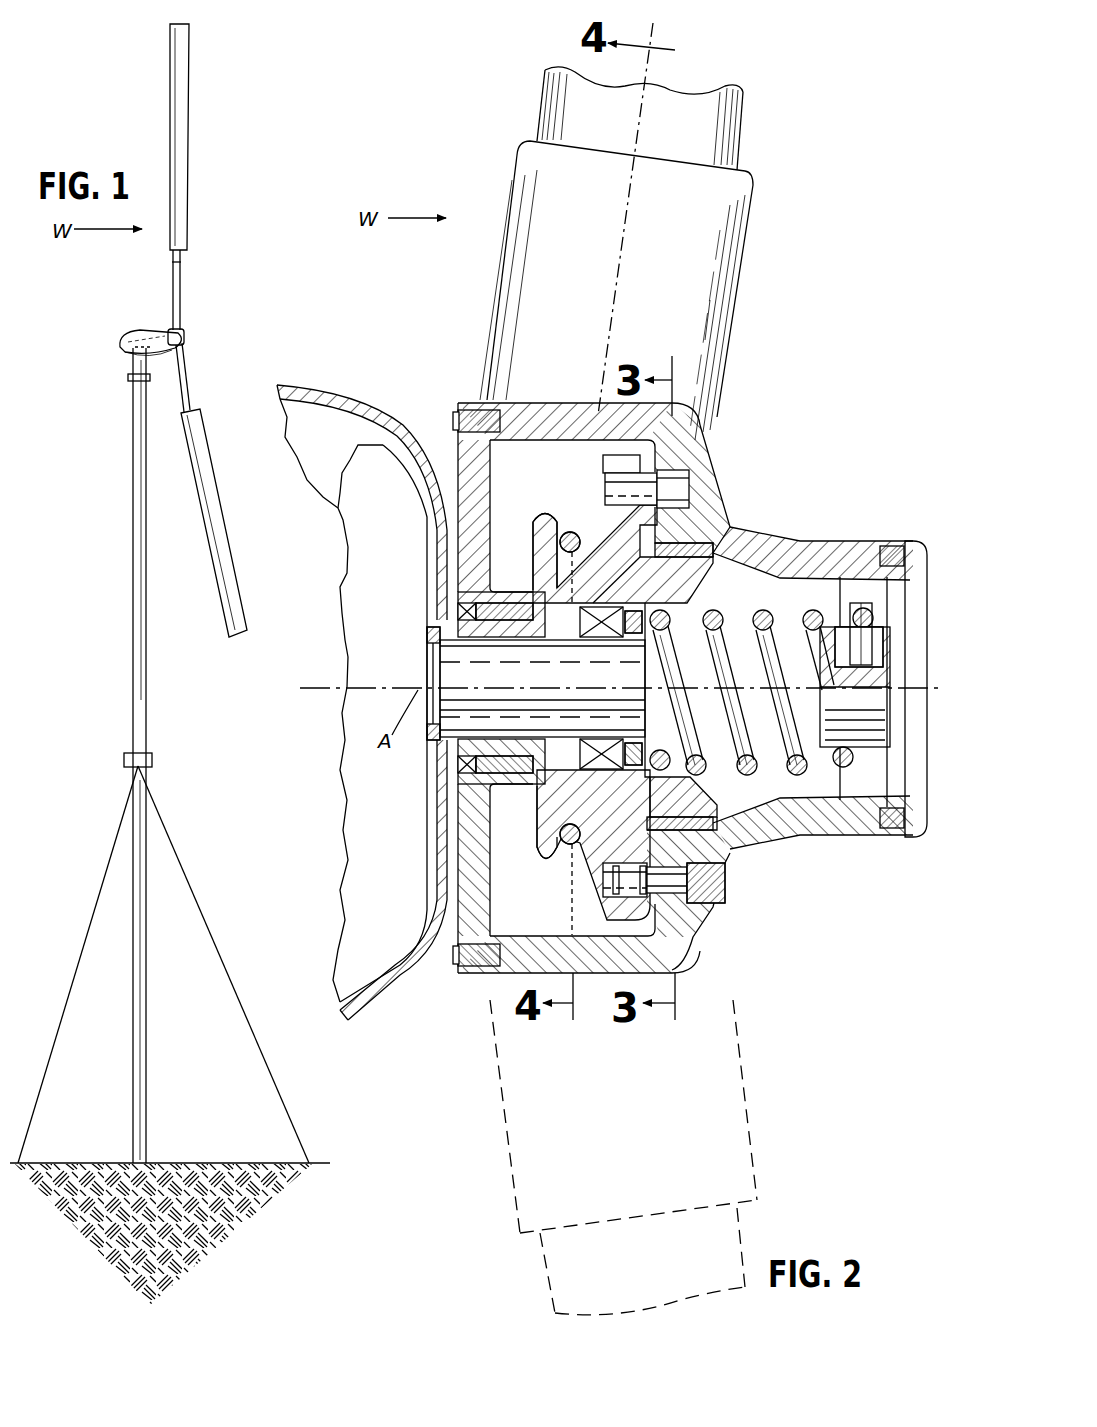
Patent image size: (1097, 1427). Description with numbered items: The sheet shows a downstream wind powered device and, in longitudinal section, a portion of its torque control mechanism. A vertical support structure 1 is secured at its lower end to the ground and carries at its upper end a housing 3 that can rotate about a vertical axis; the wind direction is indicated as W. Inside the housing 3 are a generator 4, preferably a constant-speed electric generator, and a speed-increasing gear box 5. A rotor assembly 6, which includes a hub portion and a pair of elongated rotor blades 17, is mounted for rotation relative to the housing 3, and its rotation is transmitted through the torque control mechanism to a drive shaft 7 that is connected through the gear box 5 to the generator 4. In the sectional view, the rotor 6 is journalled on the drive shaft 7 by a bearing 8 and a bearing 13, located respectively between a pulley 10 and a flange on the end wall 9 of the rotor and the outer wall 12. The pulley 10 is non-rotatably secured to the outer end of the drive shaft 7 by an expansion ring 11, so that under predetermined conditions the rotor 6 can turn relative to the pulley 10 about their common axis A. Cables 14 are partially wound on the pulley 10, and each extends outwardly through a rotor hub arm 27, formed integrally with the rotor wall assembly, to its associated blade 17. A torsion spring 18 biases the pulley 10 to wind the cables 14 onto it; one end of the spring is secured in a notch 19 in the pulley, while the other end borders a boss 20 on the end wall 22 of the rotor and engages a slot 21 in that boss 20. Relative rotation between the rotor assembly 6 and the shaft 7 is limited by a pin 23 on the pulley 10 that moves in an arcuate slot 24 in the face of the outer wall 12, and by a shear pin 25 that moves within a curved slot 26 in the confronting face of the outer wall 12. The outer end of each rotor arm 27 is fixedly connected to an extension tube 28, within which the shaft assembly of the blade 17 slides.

In FIG. 1, the vertical support structure 1 is at (166, 880).
In FIG. 1, the housing 3 is at (122, 333).
In FIG. 2, the housing 3 is at (342, 395).
In FIG. 1, the generator 4 is at (126, 358).
In FIG. 1, the speed-increasing gear box 5 is at (153, 330).
In FIG. 2, the speed-increasing gear box 5 is at (388, 452).
In FIG. 1, the rotor assembly 6 is at (199, 226).
In FIG. 2, the rotor assembly 6 is at (736, 410).
In FIG. 1, the drive shaft 7 is at (167, 350).
In FIG. 2, the drive shaft 7 is at (508, 684).
In FIG. 2, the bearing 8 is at (520, 600).
In FIG. 2, the end wall 9 is at (460, 495).
In FIG. 2, the pulley 10 is at (548, 510).
In FIG. 2, the expansion ring 11 is at (603, 637).
In FIG. 2, the outer wall 12 is at (752, 545).
In FIG. 2, the bearing 13 is at (704, 528).
In FIG. 2, the cable 14 is at (580, 533).
In FIG. 1, the rotor blade 17 is at (182, 96).
In FIG. 2, the torsion spring 18 is at (668, 672).
In FIG. 2, the notch 19 is at (700, 788).
In FIG. 2, the boss 20 is at (828, 680).
In FIG. 2, the slot 21 is at (848, 630).
In FIG. 2, the end wall 22 is at (922, 580).
In FIG. 2, the pin 23 is at (690, 500).
In FIG. 2, the arcuate slot 24 is at (705, 462).
In FIG. 2, the shear pin 25 is at (628, 866).
In FIG. 2, the curved slot 26 is at (705, 905).
In FIG. 2, the rotor hub arm 27 is at (724, 268).
In FIG. 2, the extension tube 28 is at (730, 120).